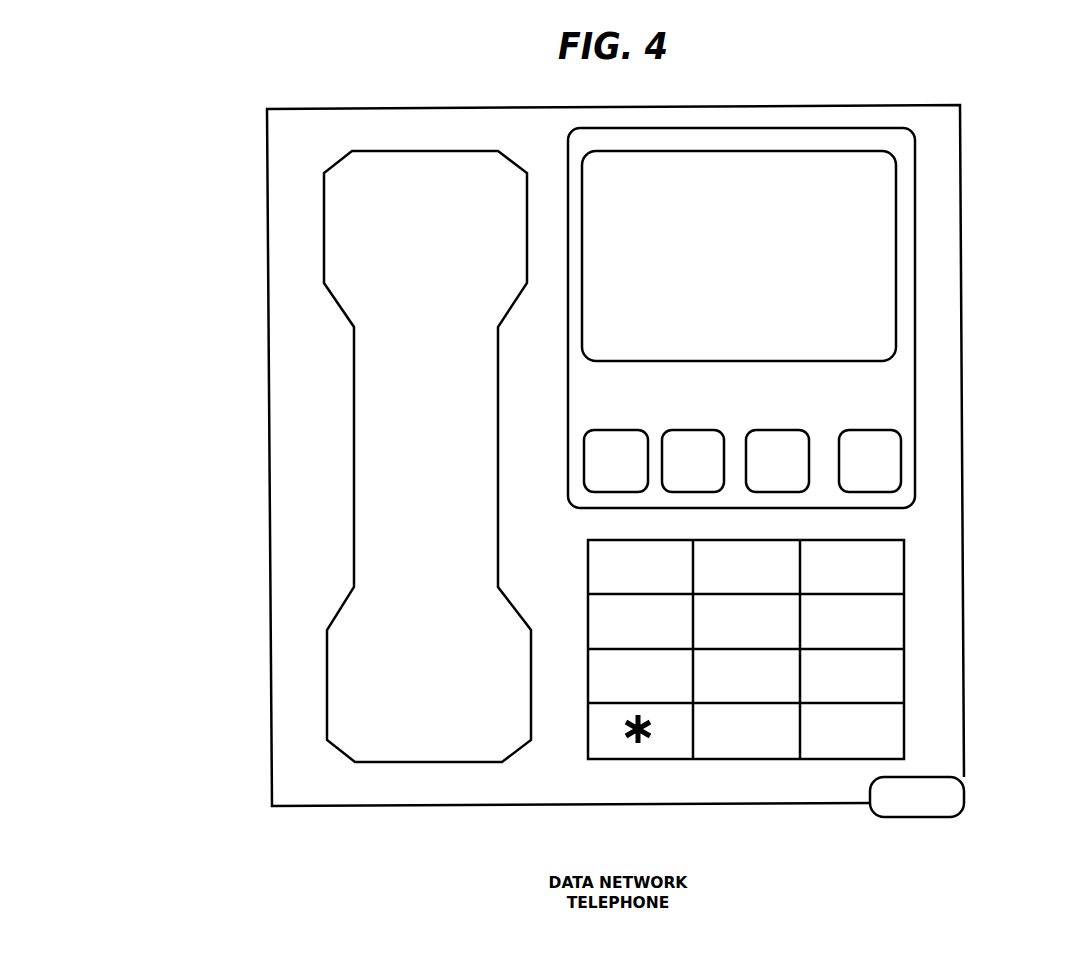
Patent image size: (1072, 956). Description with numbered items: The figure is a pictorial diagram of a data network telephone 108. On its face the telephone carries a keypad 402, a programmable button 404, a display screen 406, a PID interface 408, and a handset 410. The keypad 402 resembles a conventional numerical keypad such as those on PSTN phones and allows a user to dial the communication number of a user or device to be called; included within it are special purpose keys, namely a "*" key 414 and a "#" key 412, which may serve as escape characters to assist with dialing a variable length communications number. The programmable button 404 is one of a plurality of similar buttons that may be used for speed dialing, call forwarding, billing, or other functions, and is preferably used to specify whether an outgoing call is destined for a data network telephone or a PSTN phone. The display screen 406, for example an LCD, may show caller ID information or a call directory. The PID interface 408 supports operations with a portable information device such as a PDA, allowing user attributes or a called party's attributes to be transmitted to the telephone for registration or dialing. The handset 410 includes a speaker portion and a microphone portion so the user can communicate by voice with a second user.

The data network telephone 108 is at (960, 181).
The keypad 402 is at (779, 647).
The programmable button 404 is at (901, 460).
The display screen 406 is at (896, 257).
The PID interface 408 is at (917, 796).
The handset 410 is at (385, 448).
The "#" key 412 is at (878, 723).
The "*" key 414 is at (648, 748).